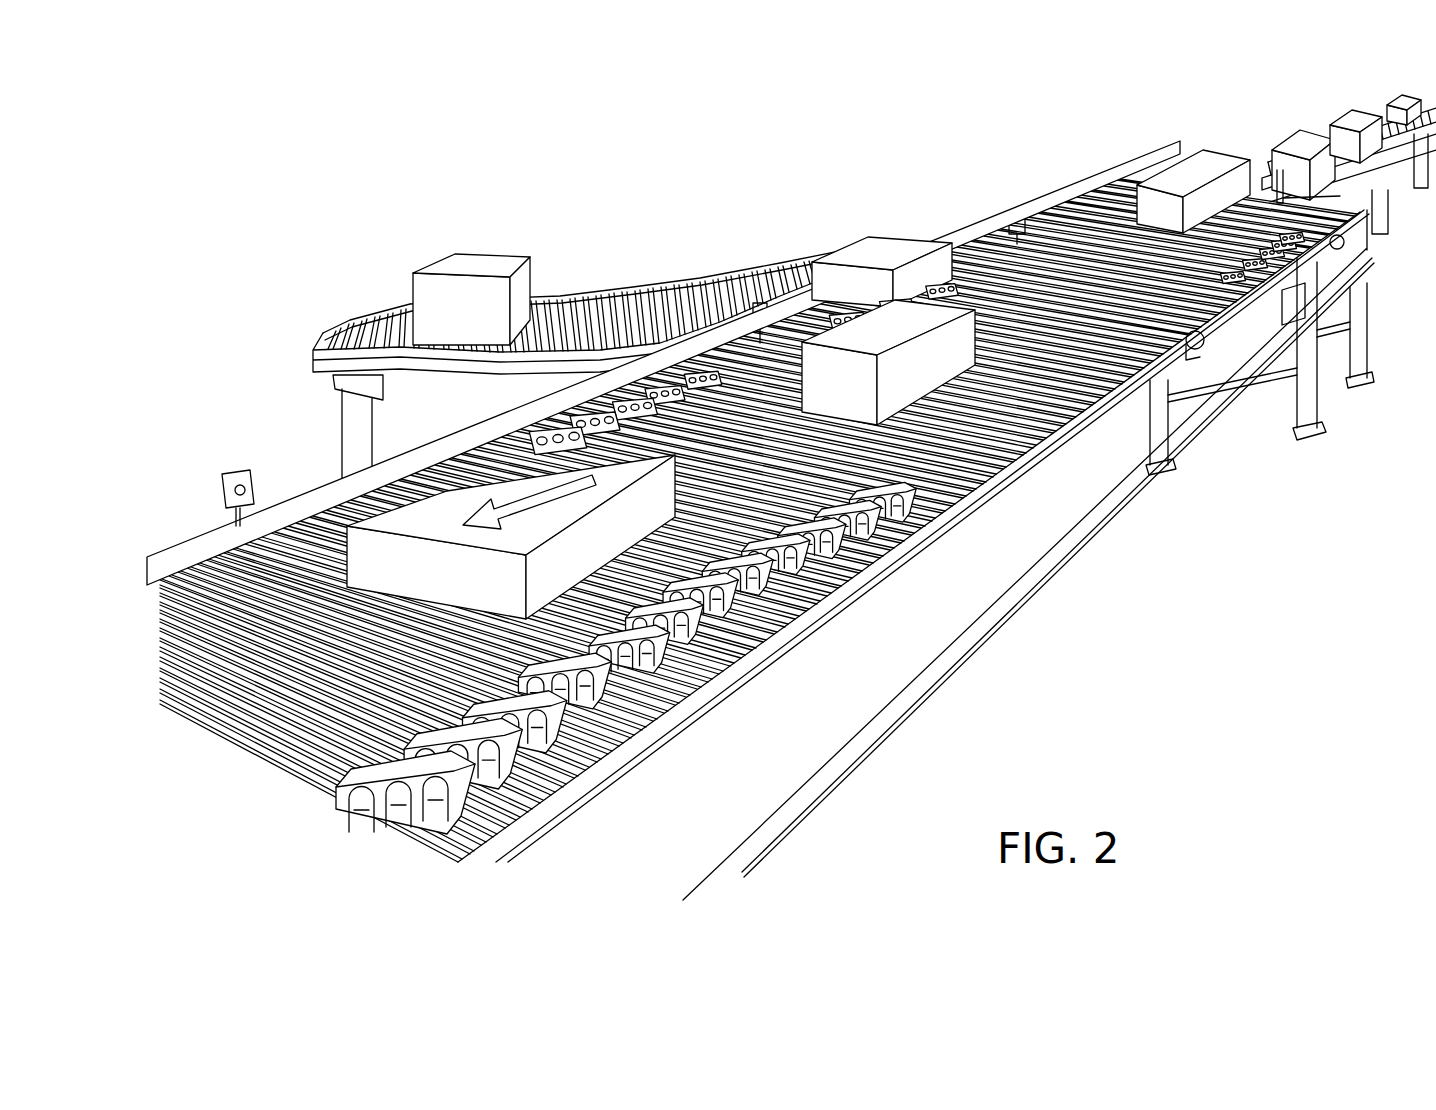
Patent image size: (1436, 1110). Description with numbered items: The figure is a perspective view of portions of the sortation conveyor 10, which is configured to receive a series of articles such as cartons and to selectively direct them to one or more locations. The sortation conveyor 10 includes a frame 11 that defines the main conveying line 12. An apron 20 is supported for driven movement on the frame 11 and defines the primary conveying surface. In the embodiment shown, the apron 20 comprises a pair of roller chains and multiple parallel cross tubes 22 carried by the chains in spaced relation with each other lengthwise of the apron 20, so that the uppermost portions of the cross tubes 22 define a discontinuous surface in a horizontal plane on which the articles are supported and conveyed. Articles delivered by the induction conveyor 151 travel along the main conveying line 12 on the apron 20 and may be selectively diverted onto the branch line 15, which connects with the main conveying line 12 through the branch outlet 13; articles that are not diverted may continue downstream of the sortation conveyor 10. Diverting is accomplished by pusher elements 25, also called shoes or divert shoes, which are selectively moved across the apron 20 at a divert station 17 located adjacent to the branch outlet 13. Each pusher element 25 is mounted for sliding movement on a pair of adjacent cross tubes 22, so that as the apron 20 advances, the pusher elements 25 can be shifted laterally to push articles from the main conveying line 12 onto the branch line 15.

The sortation conveyor 10 is at (1046, 90).
The frame 11 is at (1152, 496).
The main conveying line 12 is at (528, 418).
The branch outlet 13 is at (948, 253).
The branch line 15 is at (612, 284).
The divert station 17 is at (1054, 206).
The apron 20 is at (244, 712).
The cross tubes 22 is at (232, 622).
The pusher element 25 is at (704, 655).
The induction conveyor 151 is at (1300, 120).